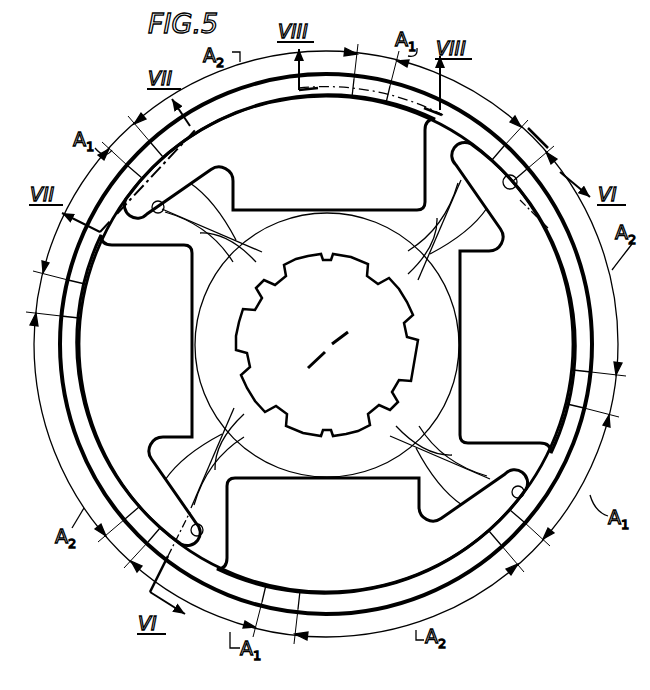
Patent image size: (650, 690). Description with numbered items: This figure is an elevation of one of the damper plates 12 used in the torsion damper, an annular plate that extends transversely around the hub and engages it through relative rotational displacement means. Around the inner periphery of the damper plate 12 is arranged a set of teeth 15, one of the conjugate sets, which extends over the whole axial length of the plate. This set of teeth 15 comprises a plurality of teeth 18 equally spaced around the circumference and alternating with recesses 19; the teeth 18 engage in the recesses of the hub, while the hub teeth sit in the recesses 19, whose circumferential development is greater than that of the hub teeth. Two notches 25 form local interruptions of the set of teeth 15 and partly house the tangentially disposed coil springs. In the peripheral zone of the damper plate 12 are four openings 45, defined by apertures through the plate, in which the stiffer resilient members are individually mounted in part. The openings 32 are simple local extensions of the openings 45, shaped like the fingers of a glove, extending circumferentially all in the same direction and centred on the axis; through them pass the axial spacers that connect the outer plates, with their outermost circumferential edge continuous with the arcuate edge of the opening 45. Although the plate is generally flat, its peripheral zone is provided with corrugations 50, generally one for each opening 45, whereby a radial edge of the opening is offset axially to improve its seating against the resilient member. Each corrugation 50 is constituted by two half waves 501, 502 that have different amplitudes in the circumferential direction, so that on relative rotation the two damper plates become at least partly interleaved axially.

The damper plate 12 is at (516, 120).
The set of teeth 15 is at (307, 282).
The teeth 18 is at (262, 307).
The recesses 19 is at (280, 266).
The notch 25 is at (333, 256).
The openings 32 is at (165, 208).
The openings 45 is at (426, 176).
The corrugations 50 is at (95, 200).
The half wave 501 is at (88, 263).
The half wave 502 is at (226, 108).